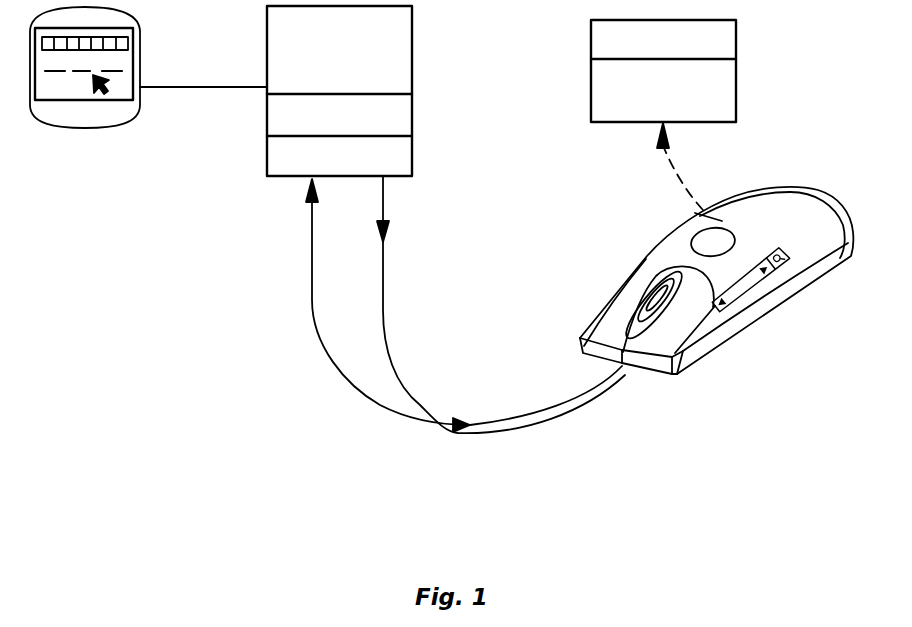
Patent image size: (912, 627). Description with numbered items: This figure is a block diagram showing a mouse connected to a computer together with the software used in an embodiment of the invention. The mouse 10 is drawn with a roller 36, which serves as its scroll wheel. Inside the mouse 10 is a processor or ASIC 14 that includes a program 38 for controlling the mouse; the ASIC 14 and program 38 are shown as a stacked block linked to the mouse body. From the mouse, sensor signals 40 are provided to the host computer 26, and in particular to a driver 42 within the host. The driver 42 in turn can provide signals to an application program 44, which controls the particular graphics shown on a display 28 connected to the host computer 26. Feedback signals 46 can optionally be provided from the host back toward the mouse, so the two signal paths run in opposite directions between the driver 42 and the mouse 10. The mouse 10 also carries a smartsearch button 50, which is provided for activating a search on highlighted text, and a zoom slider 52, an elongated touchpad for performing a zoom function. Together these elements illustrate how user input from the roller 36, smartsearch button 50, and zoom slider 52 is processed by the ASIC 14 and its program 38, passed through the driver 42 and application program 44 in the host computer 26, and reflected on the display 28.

The mouse 10 is at (730, 285).
The ASIC 14 is at (736, 93).
The host computer 26 is at (411, 48).
The display 28 is at (139, 58).
The roller 36 is at (650, 295).
The program 38 is at (736, 32).
The sensor signals 40 is at (312, 220).
The driver 42 is at (411, 153).
The application program 44 is at (411, 108).
The feedback signals 46 is at (383, 205).
The smartsearch button 50 is at (787, 262).
The zoom slider 52 is at (747, 295).